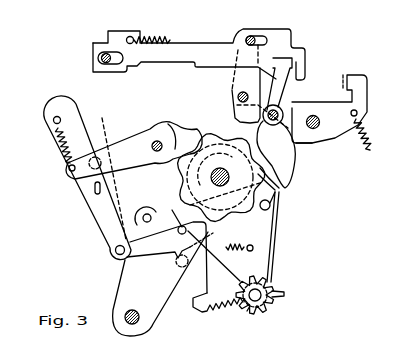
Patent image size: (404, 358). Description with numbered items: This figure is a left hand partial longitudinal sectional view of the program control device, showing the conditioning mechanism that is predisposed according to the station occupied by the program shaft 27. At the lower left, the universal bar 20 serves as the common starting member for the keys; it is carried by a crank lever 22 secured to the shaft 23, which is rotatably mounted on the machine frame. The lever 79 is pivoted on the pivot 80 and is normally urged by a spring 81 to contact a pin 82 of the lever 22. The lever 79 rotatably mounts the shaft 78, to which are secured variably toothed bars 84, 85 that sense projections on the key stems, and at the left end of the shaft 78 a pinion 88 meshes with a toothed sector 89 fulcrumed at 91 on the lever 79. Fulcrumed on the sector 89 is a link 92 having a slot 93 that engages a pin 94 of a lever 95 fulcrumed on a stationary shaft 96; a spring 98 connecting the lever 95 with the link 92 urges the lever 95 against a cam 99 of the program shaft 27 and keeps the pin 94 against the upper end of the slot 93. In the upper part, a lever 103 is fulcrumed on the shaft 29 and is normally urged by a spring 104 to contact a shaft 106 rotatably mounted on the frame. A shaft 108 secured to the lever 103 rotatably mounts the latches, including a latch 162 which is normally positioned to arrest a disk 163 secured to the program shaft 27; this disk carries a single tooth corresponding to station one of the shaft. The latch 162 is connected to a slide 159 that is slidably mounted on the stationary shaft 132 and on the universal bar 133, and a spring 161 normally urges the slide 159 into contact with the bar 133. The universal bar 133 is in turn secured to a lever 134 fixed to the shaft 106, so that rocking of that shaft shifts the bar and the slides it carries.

The slide 159 is at (202, 44).
The spring 161 is at (151, 36).
The stationary shaft 132 is at (97, 58).
The universal bar 133 is at (256, 38).
The lever 134 is at (238, 80).
The shaft 106 is at (237, 96).
The latch 162 is at (294, 175).
The disk 163 is at (280, 188).
The shaft 108 is at (280, 110).
The shaft 29 is at (317, 113).
The lever 103 is at (335, 128).
The spring 104 is at (366, 138).
The cam 99 is at (213, 136).
The program shaft 27 is at (230, 174).
The lever 95 is at (133, 137).
The stationary shaft 96 is at (158, 140).
The spring 98 is at (58, 142).
The link 92 is at (105, 221).
The pin 94 is at (102, 144).
The slot 93 is at (95, 189).
The pin 82 is at (147, 211).
The fulcrum 91 is at (180, 226).
The spring 81 is at (226, 265).
The crank lever 22 is at (124, 288).
The shaft 23 is at (141, 317).
The universal bar 20 is at (177, 264).
The lever 79 is at (271, 240).
The pivot 80 is at (270, 207).
The shaft 78 is at (268, 286).
The variably toothed bar 84 is at (261, 311).
The variably toothed bar 85 is at (282, 294).
The pinion 88 is at (247, 308).
The toothed sector 89 is at (207, 313).